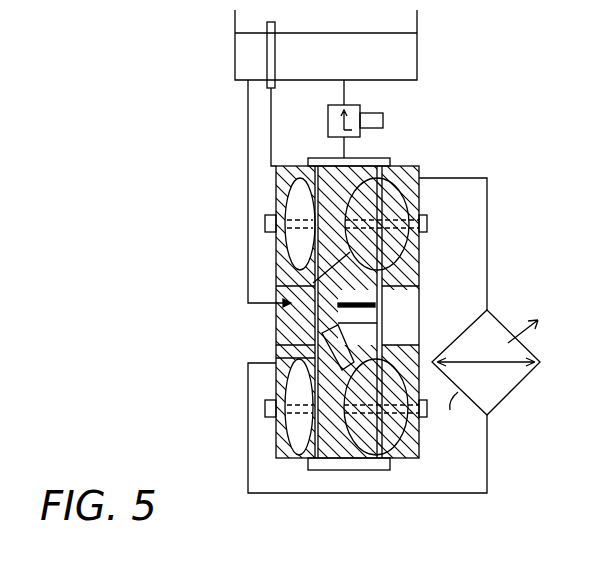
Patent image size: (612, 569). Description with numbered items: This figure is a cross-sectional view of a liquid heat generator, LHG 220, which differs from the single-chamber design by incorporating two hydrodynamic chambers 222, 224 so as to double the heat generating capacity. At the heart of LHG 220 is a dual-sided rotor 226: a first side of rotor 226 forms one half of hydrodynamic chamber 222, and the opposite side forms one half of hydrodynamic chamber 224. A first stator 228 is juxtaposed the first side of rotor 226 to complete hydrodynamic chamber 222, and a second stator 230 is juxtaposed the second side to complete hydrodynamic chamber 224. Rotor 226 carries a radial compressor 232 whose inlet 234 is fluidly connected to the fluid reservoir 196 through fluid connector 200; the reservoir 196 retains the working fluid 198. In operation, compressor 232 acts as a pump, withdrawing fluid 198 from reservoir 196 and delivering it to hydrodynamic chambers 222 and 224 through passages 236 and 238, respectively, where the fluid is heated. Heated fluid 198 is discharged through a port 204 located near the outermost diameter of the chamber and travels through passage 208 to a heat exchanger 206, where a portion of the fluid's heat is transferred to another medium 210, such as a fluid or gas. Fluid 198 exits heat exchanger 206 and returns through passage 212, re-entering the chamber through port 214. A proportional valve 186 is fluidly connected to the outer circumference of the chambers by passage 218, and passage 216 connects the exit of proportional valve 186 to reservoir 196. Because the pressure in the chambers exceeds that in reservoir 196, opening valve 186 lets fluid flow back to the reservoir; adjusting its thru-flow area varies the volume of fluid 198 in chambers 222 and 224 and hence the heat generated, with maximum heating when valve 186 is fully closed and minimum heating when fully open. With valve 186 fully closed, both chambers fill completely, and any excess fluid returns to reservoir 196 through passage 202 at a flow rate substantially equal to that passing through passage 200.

The proportional valve 186 is at (383, 120).
The fluid reservoir 196 is at (417, 65).
The fluid 198 is at (397, 50).
The fluid connector 200 is at (248, 143).
The passage 202 is at (271, 107).
The port 204 is at (417, 175).
The heat exchanger 206 is at (515, 390).
The passage 208 is at (487, 197).
The medium 210 is at (520, 332).
The passage 212 is at (487, 430).
The port 214 is at (364, 314).
The passage 216 is at (346, 93).
The passage 218 is at (346, 147).
The LHG 220 is at (540, 118).
The hydrodynamic chamber 222 is at (295, 440).
The hydrodynamic chamber 224 is at (380, 430).
The dual-sided rotor 226 is at (345, 470).
The first stator 228 is at (290, 462).
The second stator 230 is at (412, 460).
The radial compressor 232 is at (313, 290).
The inlet 234 is at (280, 313).
The passage 236 is at (327, 248).
The passage 238 is at (365, 248).